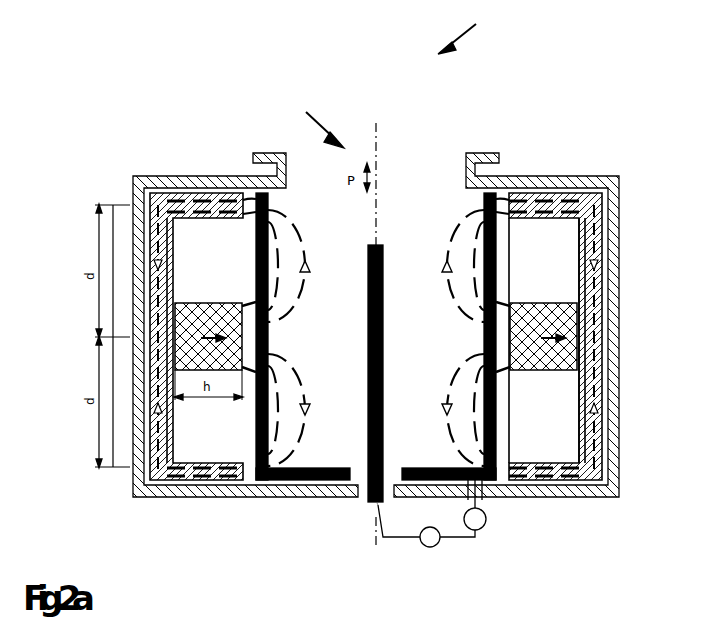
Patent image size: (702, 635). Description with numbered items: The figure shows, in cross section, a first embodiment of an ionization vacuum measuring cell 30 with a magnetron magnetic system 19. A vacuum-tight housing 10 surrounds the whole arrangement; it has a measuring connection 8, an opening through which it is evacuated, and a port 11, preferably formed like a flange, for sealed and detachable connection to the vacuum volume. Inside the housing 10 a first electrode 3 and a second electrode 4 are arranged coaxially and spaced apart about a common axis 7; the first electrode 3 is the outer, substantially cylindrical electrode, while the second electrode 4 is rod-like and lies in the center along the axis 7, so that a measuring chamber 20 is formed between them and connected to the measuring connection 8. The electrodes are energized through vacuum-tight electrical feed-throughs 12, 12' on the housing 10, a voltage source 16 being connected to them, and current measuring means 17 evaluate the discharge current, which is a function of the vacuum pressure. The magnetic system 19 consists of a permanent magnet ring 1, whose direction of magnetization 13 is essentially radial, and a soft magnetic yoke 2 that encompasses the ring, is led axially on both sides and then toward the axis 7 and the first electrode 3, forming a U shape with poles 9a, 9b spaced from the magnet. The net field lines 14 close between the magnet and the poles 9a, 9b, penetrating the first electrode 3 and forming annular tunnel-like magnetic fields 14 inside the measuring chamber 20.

The permanent magnet ring 1 is at (185, 305).
The yoke 2 is at (167, 437).
The first electrode 3 is at (268, 337).
The second electrode 4 is at (383, 372).
The axis 7 is at (378, 127).
The measuring connection 8 is at (320, 122).
The pole 9a is at (238, 197).
The pole 9b is at (240, 476).
The housing 10 is at (612, 278).
The port 11 is at (485, 160).
The electrical feed-through 12 is at (520, 513).
The electrical feed-through 12' is at (339, 527).
The direction of magnetization 13 is at (217, 310).
The magnetic field lines 14 is at (300, 243).
The voltage source 16 is at (428, 548).
The current measuring means 17 is at (483, 527).
The magnetic system 19 is at (537, 297).
The measuring chamber 20 is at (337, 325).
The ionization vacuum measuring cell 30 is at (467, 31).